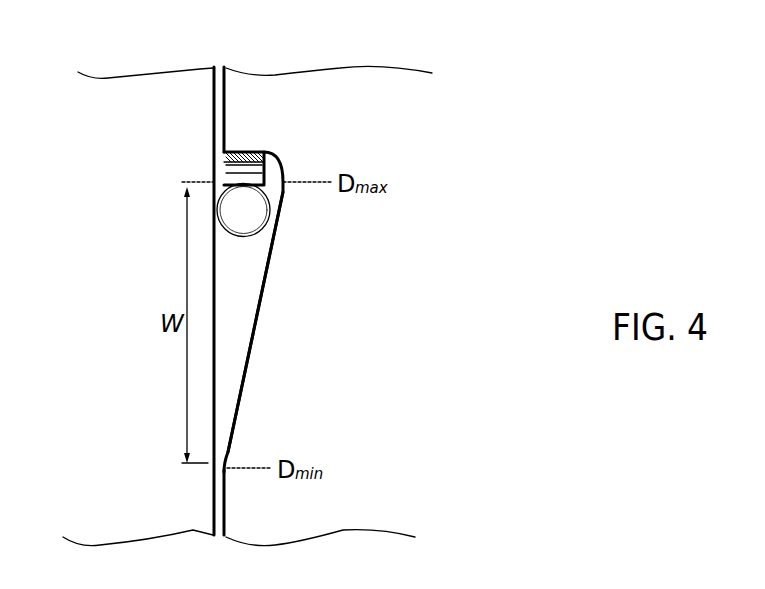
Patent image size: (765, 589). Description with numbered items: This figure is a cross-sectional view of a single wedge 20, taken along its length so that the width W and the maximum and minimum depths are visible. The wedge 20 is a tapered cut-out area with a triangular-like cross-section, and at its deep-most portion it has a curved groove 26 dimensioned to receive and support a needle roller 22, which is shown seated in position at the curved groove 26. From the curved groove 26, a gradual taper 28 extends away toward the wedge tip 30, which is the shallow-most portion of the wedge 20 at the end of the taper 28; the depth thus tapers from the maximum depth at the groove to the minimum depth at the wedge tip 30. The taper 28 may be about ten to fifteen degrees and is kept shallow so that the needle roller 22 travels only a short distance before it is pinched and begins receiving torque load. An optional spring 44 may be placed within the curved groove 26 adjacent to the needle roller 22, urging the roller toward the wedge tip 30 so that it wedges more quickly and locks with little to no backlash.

The wedge 20 is at (104, 297).
The needle roller 22 is at (257, 222).
The curved groove 26 is at (283, 160).
The taper 28 is at (252, 327).
The wedge tip 30 is at (213, 473).
The spring 44 is at (238, 152).